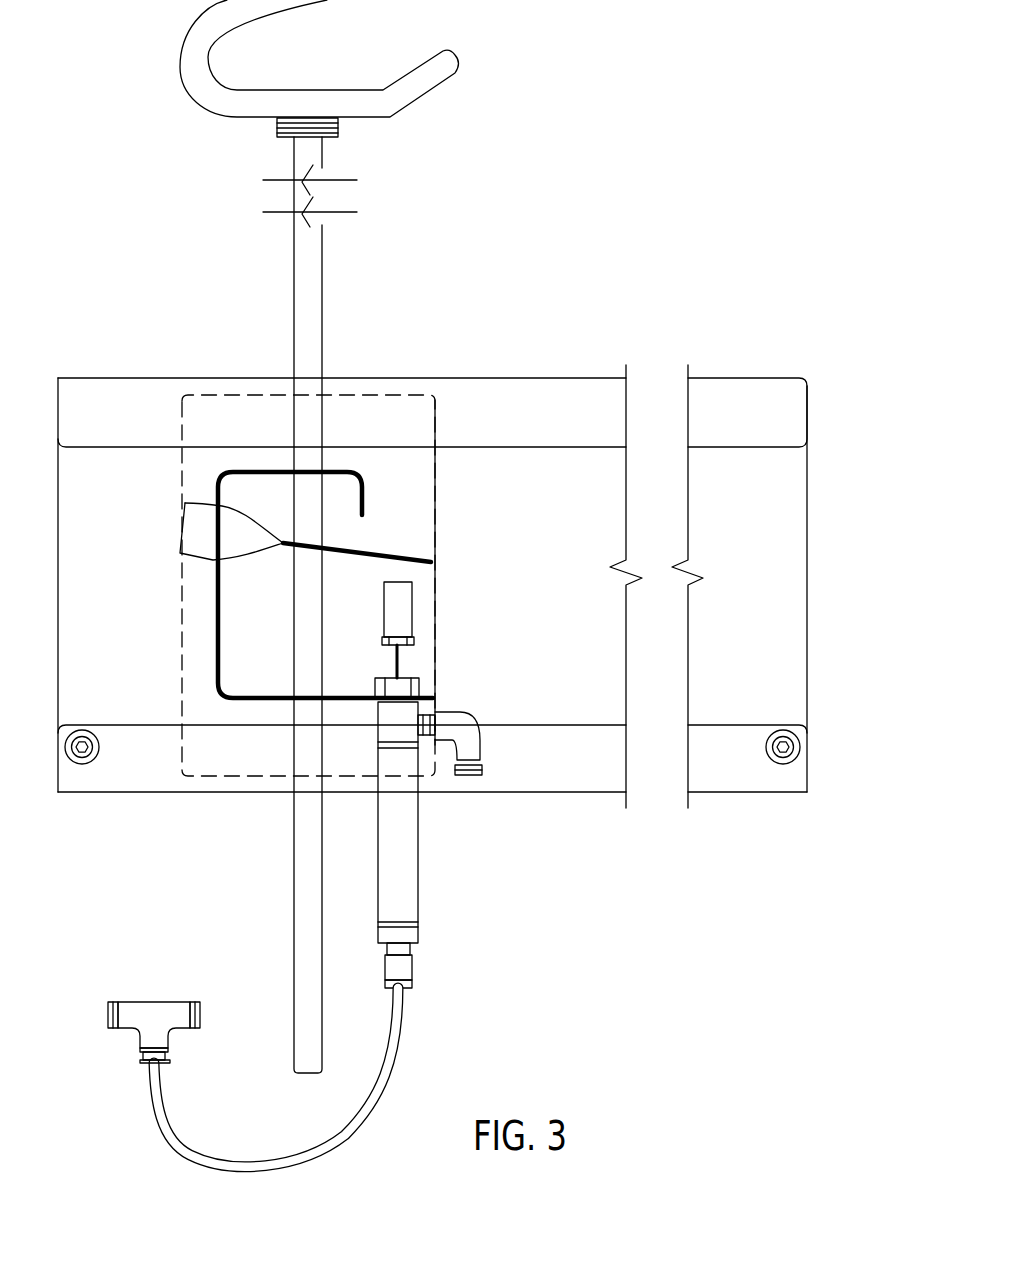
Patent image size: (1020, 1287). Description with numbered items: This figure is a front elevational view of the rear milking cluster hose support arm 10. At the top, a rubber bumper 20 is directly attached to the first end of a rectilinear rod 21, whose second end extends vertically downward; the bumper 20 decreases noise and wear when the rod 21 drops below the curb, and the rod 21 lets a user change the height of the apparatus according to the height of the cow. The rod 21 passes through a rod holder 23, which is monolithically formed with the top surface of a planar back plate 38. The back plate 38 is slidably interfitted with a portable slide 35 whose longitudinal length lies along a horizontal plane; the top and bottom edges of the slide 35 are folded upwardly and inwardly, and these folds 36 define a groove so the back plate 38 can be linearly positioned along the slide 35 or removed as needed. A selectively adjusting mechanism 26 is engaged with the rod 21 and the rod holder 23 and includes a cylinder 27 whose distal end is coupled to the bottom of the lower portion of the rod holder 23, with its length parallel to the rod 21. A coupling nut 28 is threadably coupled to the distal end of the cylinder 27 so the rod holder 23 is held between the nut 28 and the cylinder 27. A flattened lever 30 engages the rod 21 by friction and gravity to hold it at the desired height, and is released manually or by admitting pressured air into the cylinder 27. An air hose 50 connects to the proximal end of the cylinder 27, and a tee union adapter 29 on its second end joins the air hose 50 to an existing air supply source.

The rear milking cluster hose support arm 10 is at (638, 193).
The rubber bumper 20 is at (342, 133).
The rectilinear rod 21 is at (313, 270).
The rod holder 23 is at (358, 470).
The selectively adjusting mechanism 26 is at (435, 660).
The cylinder 27 is at (407, 847).
The coupling nut 28 is at (420, 688).
The tee union adapter 29 is at (155, 1015).
The flattened lever 30 is at (368, 543).
The portable slide 35 is at (90, 533).
The folds 36 is at (798, 402).
The planar back plate 38 is at (188, 490).
The air hose 50 is at (353, 1127).